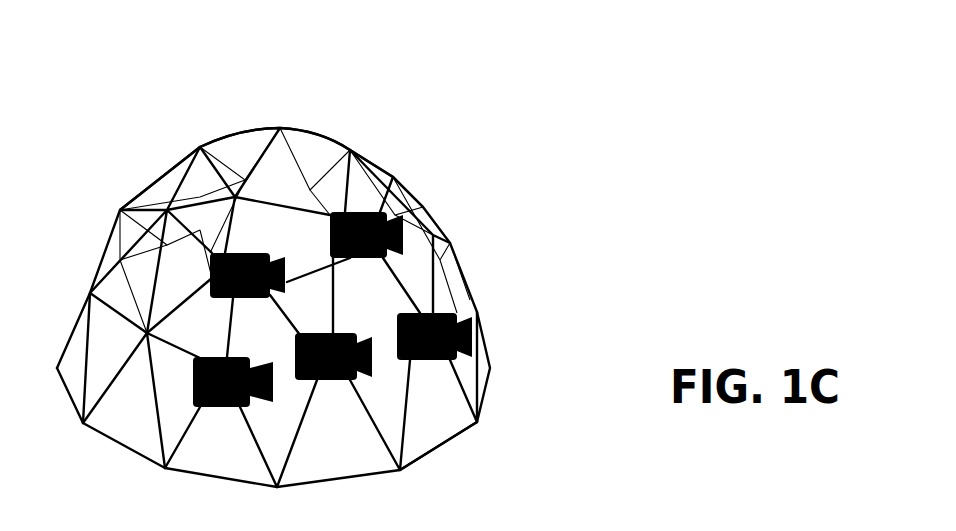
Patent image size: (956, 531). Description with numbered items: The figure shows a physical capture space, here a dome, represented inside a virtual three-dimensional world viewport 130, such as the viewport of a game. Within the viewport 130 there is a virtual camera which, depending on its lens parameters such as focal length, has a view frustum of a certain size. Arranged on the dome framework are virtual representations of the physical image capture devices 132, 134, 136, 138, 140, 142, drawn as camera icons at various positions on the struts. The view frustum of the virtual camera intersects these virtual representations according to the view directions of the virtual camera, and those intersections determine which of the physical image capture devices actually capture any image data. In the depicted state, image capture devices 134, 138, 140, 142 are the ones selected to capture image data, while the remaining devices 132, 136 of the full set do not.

The virtual 3-D world viewport 130 is at (197, 47).
The physical image capture device 132 is at (353, 25).
The image capture device 134 is at (257, 286).
The physical image capture device 136 is at (238, 392).
The image capture device 138 is at (375, 245).
The image capture device 140 is at (342, 368).
The image capture device 142 is at (444, 348).